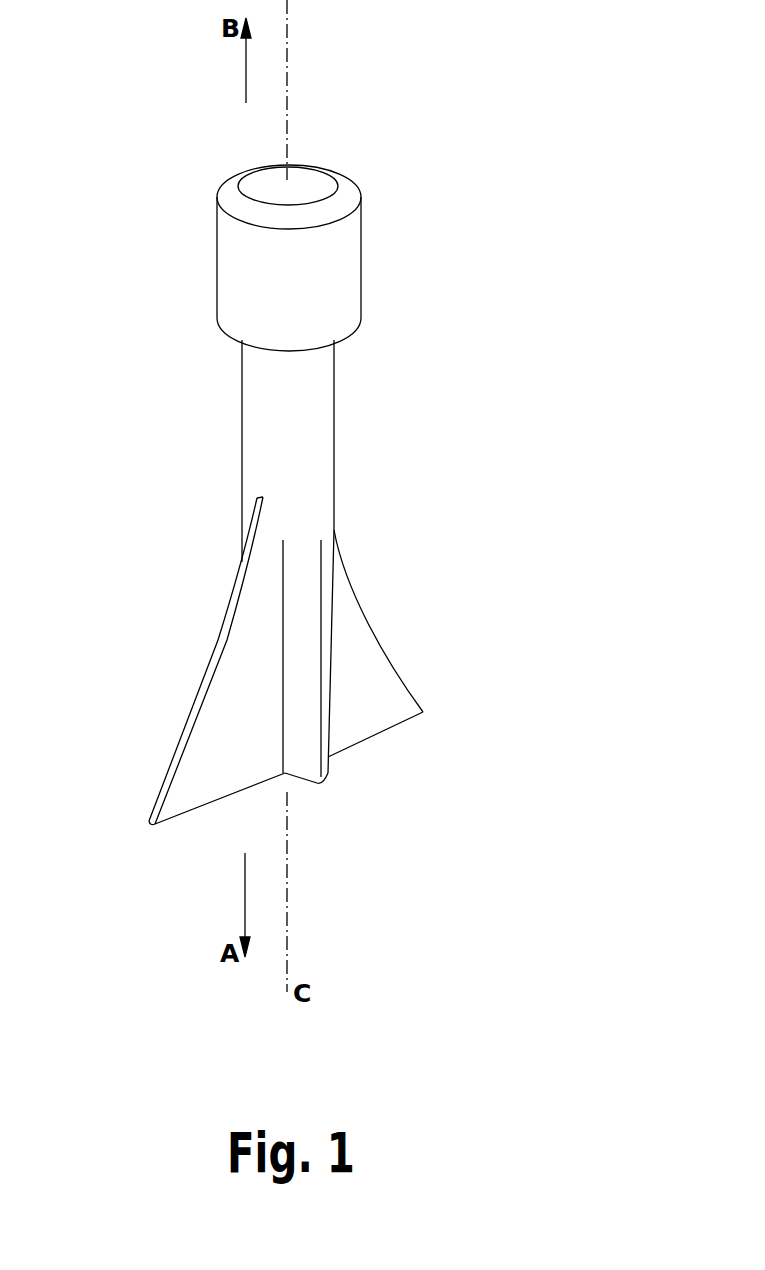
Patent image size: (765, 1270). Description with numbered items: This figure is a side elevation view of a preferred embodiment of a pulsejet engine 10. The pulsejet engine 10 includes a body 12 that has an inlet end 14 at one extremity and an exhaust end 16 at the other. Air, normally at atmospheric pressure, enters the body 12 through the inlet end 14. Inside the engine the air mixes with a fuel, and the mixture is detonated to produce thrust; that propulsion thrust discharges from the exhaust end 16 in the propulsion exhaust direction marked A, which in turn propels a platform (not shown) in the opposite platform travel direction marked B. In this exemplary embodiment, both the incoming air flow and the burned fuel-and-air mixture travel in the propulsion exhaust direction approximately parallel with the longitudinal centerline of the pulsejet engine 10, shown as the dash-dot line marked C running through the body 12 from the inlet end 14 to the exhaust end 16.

The pulsejet engine 10 is at (427, 353).
The body 12 is at (305, 477).
The inlet end 14 is at (338, 287).
The exhaust end 16 is at (305, 765).